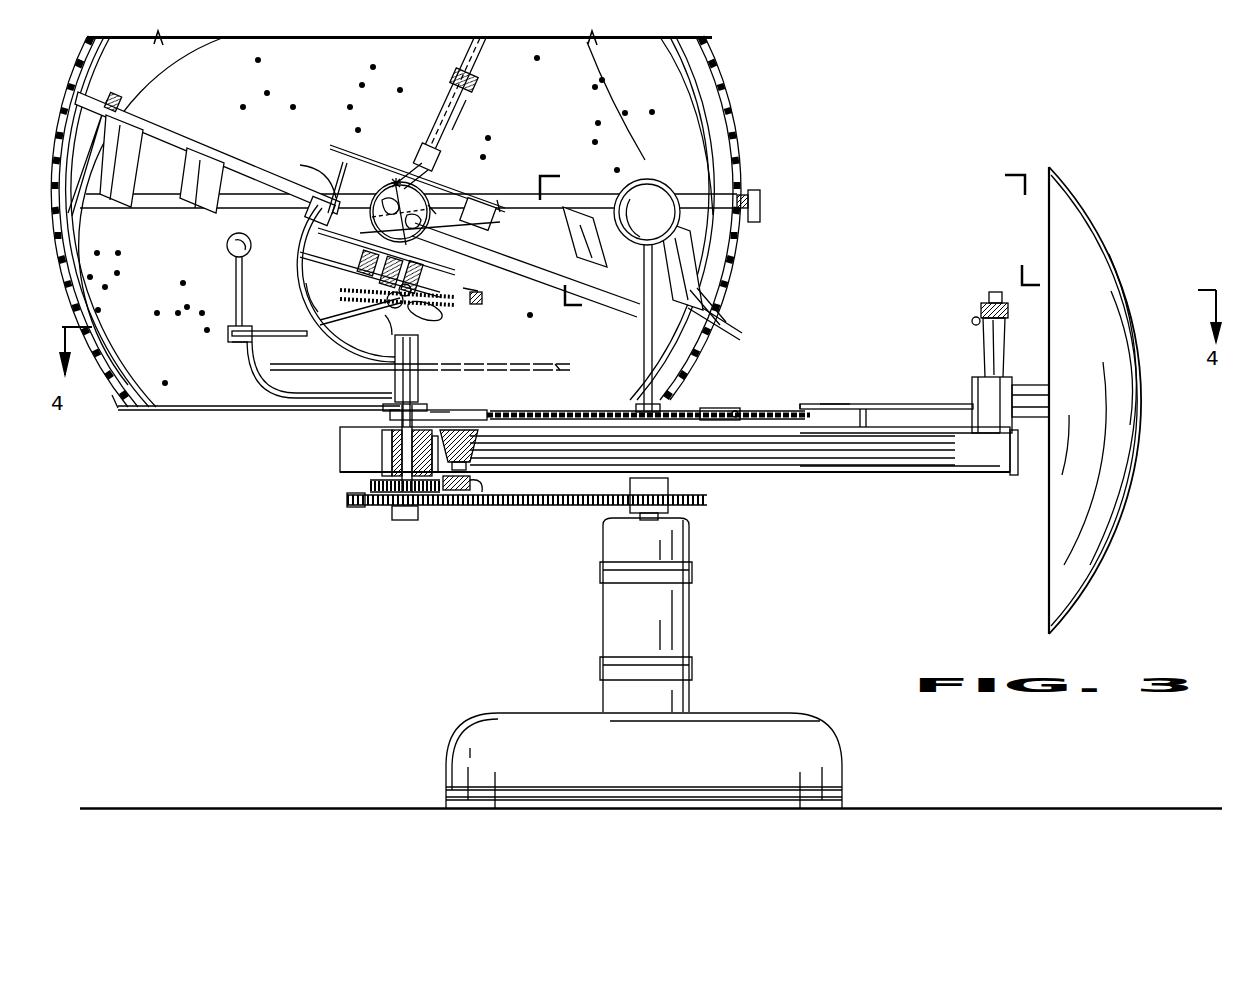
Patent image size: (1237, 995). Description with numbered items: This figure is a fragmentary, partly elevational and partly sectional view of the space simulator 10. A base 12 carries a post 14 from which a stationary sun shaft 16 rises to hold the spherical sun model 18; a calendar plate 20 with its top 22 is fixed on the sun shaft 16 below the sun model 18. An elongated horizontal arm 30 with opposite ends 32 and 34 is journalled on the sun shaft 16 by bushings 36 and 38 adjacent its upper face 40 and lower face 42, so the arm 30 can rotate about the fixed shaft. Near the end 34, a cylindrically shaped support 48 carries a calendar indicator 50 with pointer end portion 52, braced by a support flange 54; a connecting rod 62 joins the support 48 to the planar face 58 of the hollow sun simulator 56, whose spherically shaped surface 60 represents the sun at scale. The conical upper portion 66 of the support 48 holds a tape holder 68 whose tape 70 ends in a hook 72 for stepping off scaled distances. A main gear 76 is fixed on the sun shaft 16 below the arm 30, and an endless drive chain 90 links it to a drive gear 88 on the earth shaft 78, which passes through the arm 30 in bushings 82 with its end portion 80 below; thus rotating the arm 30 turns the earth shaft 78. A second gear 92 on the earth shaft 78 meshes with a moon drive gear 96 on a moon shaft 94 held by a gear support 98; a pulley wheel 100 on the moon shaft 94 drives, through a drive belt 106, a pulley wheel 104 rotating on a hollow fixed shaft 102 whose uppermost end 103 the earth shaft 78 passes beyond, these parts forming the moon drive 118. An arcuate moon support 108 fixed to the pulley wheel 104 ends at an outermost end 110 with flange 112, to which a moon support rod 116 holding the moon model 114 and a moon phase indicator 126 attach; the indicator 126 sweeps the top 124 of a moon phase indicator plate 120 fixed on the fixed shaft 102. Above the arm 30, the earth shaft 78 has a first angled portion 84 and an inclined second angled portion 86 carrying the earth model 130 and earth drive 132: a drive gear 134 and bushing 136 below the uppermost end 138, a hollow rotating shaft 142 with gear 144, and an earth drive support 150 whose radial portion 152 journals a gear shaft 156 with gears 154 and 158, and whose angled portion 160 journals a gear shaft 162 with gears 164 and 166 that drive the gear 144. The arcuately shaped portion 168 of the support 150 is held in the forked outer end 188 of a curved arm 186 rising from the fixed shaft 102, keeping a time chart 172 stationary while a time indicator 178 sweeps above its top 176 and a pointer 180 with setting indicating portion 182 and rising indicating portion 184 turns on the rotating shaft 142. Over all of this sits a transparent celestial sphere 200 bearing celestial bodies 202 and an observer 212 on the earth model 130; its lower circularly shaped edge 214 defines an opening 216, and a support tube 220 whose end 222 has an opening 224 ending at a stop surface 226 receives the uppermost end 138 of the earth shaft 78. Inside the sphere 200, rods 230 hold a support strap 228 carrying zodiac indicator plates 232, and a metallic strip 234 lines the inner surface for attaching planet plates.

The space simulator 10 is at (770, 64).
The base 12 is at (750, 740).
The post 14 is at (664, 621).
The sun shaft 16 is at (652, 340).
The sun model 18 is at (662, 200).
The calendar plate 20 is at (778, 440).
The top 22 is at (735, 412).
The horizontal arm 30 is at (905, 470).
The end 32 is at (384, 452).
The end 34 is at (1015, 472).
The bushing 36 is at (690, 413).
The bushing 38 is at (705, 476).
The upper face 40 is at (898, 432).
The lower face 42 is at (850, 473).
The support 48 is at (972, 390).
The calendar indicator 50 is at (828, 405).
The pointer end portion 52 is at (805, 405).
The support flange 54 is at (858, 418).
The sun simulator 56 is at (1100, 580).
The planar face 58 is at (1049, 172).
The spherically shaped surface 60 is at (1130, 450).
The connecting rod 62 is at (1040, 398).
The upper portion 66 is at (1005, 365).
The tape holder 68 is at (985, 298).
The tape 70 is at (980, 310).
The hook 72 is at (975, 325).
The main gear 76 is at (695, 508).
The earth shaft 78 is at (403, 493).
The end portion 80 is at (400, 470).
The bushings 82 is at (385, 430).
The first angled portion 84 is at (385, 315).
The second angled portion 86 is at (368, 304).
The drive gear 88 is at (355, 507).
The endless drive chain 90 is at (560, 506).
The second gear 92 is at (392, 510).
The moon shaft 94 is at (478, 455).
The moon drive gear 96 is at (462, 492).
The gear support 98 is at (468, 492).
The pulley wheel 100 is at (460, 413).
The fixed shaft 102 is at (395, 375).
The uppermost end 103 is at (418, 338).
The pulley wheel 104 is at (388, 408).
The drive belt 106 is at (440, 412).
The moon support 108 is at (252, 365).
The outermost end 110 is at (252, 345).
The flange 112 is at (230, 336).
The moon model 114 is at (225, 250).
The moon support rod 116 is at (234, 282).
The moon drive 118 is at (505, 413).
The moon phase indicator plate 120 is at (535, 370).
The top 124 is at (560, 364).
The moon phase indicator 126 is at (258, 338).
The earth model 130 is at (483, 216).
The earth drive 132 is at (470, 288).
The drive gear 134 is at (345, 290).
The bushing 136 is at (360, 272).
The uppermost end 138 is at (470, 98).
The hollow rotating shaft 142 is at (487, 226).
The gear 144 is at (320, 240).
The earth drive support 150 is at (462, 314).
The radial portion 152 is at (350, 262).
The gear 154 is at (345, 320).
The gear shaft 156 is at (415, 270).
The gear 158 is at (380, 366).
The angled portion 160 is at (445, 320).
The gear shaft 162 is at (455, 287).
The gear 164 is at (445, 305).
The gear 166 is at (458, 300).
The arcuately shaped portion 168 is at (302, 168).
The time chart 172 is at (338, 185).
The top 176 is at (380, 195).
The time indicator 178 is at (520, 250).
The pointer 180 is at (430, 205).
The setting indicating portion 182 is at (332, 144).
The rising indicating portion 184 is at (497, 200).
The curved arm 186 is at (308, 292).
The forked outer end 188 is at (300, 205).
The celestial sphere 200 is at (752, 108).
The celestial bodies 202 is at (118, 310).
The observer 212 is at (441, 147).
The lower circularly shaped edge 214 is at (116, 412).
The opening 216 is at (125, 403).
The support tube 220 is at (470, 52).
The end 222 is at (417, 172).
The opening 224 is at (462, 120).
The stop surface 226 is at (474, 80).
The support strap 228 is at (705, 300).
The rods 230 is at (112, 86).
The zodiac indicator plates 232 is at (150, 128).
The strip 234 is at (750, 195).